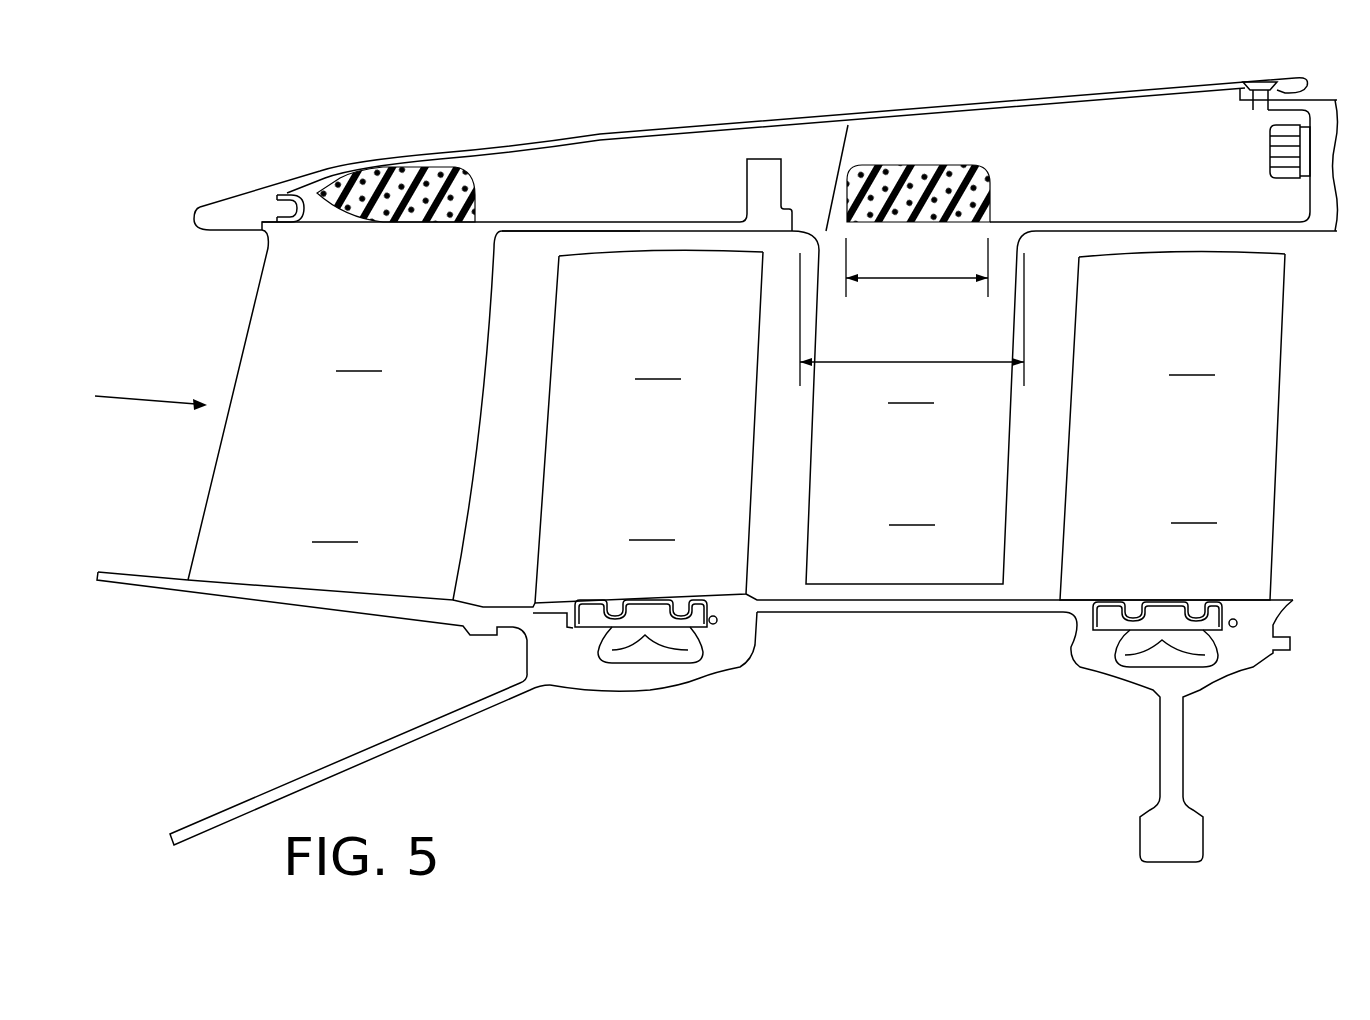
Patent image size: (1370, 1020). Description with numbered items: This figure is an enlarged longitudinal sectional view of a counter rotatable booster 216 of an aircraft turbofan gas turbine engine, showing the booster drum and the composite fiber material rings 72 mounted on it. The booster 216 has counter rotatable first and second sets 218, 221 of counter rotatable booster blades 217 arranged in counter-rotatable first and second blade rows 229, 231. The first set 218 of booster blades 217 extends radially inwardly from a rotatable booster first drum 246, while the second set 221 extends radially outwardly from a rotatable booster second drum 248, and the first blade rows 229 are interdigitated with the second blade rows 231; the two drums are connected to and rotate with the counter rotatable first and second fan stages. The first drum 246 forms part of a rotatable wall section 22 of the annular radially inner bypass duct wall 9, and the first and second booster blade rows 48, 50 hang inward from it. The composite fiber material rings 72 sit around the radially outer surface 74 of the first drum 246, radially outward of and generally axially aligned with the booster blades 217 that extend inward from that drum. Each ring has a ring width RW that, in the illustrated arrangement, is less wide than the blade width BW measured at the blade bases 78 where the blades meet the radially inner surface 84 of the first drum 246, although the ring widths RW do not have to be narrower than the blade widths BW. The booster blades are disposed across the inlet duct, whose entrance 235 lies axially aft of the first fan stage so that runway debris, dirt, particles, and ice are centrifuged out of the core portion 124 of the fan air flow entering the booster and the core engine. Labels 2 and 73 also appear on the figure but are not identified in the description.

The turbine section 2 is at (925, 76).
The radially inner bypass duct wall 9 is at (1140, 128).
The counter rotatable booster 216 is at (645, 110).
The rotatable booster first drum 246 is at (300, 198).
The rotatable wall section 22 is at (200, 212).
The composite fiber material rings 72 is at (395, 175).
The seal material 73 is at (452, 172).
The blade bases 78 is at (842, 160).
The radially inner surface 84 is at (580, 237).
The radially outer surface 74 is at (562, 222).
The first booster blade row 48 is at (470, 245).
The second blade rows 231 is at (640, 252).
The second booster blade row 50 is at (925, 258).
The entrance 235 is at (215, 340).
The core portion 124 is at (147, 398).
The first set of counter rotatable booster blades 218 is at (613, 387).
The counter rotatable booster blades 217 is at (701, 389).
The second set of counter rotatable booster blades 221 is at (910, 398).
The first blade rows 229 is at (272, 590).
The rotatable booster second drum 248 is at (848, 612).
The ring widths RW is at (918, 283).
The blade widths BW is at (918, 358).